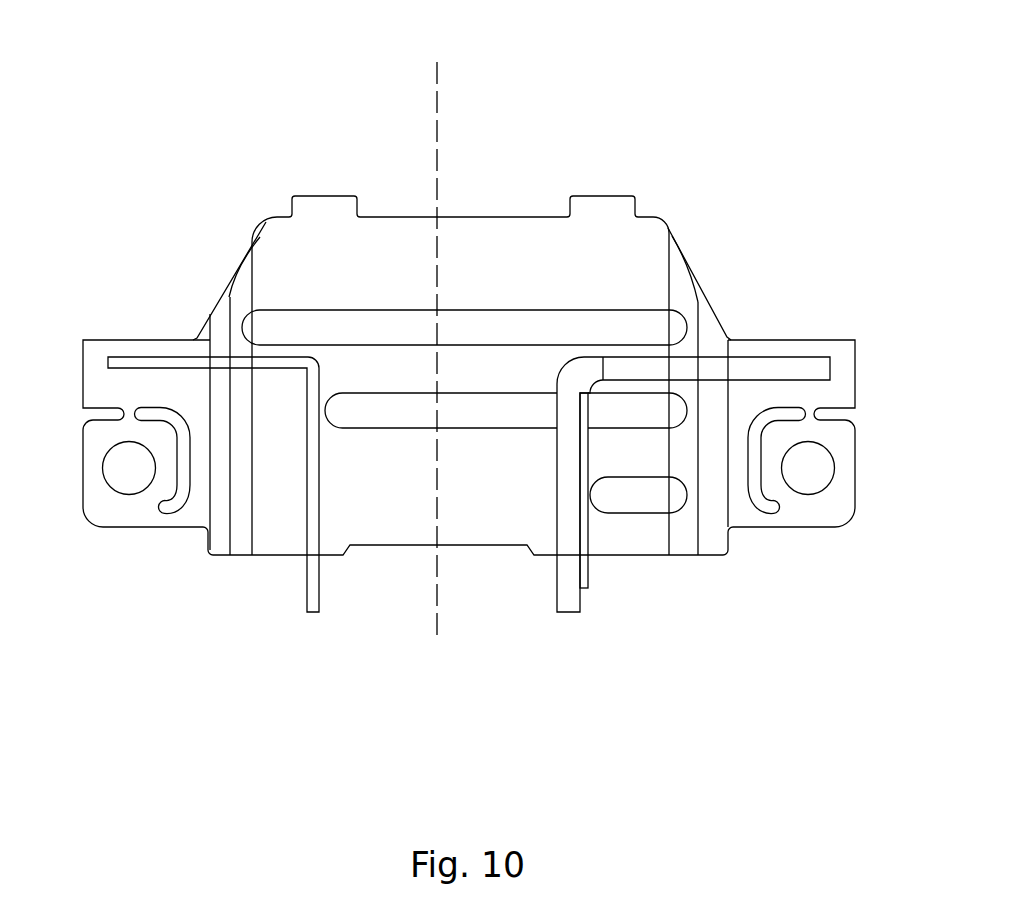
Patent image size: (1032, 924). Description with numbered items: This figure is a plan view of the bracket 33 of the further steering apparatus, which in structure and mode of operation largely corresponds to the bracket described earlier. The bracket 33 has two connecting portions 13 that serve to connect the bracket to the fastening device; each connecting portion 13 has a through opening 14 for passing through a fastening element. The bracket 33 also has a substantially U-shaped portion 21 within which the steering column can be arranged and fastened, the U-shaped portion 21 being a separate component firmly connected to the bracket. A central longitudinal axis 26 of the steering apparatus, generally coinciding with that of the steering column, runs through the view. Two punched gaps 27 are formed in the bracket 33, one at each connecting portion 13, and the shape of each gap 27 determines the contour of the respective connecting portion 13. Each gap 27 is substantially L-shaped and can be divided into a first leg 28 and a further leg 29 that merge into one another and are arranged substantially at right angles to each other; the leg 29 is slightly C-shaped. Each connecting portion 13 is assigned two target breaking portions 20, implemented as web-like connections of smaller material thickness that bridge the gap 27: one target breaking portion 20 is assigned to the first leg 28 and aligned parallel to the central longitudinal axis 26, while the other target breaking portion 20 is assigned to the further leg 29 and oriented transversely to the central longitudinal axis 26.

The connecting portion 13 is at (91, 525).
The through opening 14 is at (134, 468).
The target breaking portion 20 is at (126, 390).
The U-shaped portion 21 is at (525, 621).
The central longitudinal axis 26 is at (437, 182).
The gap 27 is at (177, 437).
The first leg 28 is at (838, 434).
The further leg 29 is at (745, 503).
The bracket 33 is at (617, 127).